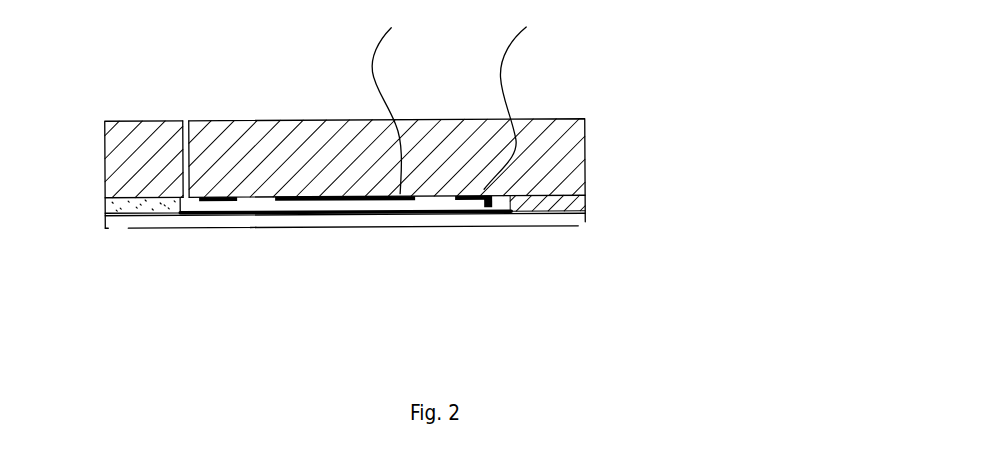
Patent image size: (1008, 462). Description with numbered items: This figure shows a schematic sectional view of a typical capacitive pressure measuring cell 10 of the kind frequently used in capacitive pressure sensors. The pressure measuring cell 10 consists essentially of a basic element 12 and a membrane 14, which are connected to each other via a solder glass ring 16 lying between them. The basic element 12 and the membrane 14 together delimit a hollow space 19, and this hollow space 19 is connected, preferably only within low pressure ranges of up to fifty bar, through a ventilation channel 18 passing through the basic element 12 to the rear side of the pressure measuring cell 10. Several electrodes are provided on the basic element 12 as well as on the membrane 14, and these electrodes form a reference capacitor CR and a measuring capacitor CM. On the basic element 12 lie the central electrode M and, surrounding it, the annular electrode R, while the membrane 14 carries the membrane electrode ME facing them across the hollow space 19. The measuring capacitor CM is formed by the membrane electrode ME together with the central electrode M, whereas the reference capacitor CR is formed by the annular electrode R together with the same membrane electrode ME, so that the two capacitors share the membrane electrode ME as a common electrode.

The pressure measuring cell 10 is at (233, 248).
The basic element 12 is at (587, 128).
The membrane 14 is at (588, 222).
The solder glass ring 16 is at (588, 203).
The ventilation channel 18 is at (183, 118).
The hollow space 19 is at (253, 228).
The central electrode M is at (311, 200).
The annular electrode R is at (490, 200).
The membrane electrode ME is at (418, 215).
The measuring capacitor CM is at (389, 99).
The reference capacitor CR is at (512, 98).